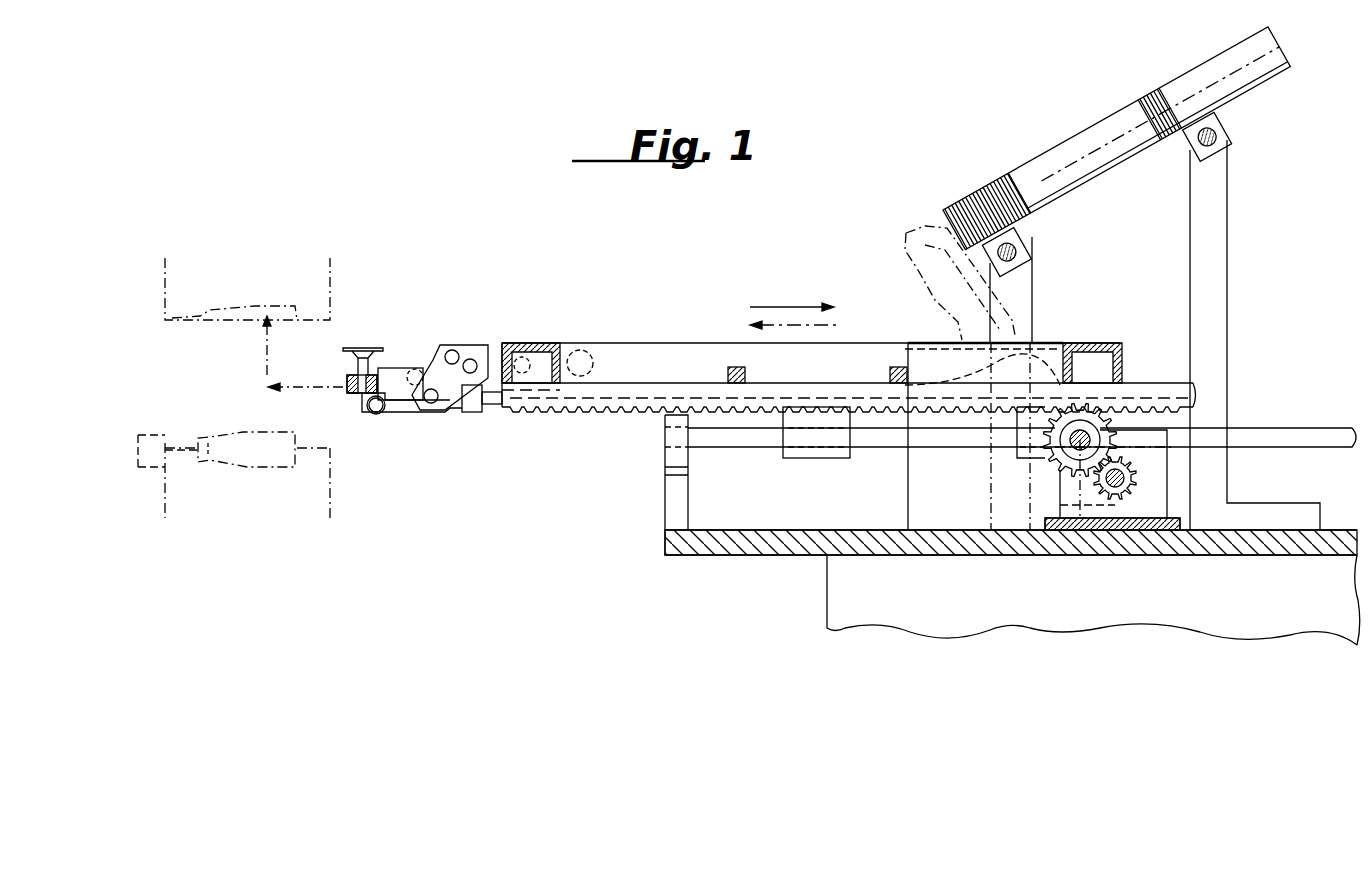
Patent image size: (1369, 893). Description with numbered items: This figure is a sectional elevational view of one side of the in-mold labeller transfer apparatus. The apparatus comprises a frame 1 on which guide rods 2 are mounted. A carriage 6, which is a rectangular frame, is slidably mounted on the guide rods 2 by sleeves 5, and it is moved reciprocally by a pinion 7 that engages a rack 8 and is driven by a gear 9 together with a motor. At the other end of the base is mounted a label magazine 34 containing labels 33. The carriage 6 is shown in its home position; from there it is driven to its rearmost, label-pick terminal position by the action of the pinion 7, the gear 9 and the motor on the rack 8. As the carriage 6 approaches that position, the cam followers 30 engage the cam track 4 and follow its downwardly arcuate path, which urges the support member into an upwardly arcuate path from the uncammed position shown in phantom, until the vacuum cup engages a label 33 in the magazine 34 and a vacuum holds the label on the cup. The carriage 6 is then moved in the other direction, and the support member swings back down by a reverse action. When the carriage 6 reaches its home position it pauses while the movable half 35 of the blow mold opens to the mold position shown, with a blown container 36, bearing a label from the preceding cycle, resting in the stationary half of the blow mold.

The frame 1 is at (680, 497).
The guide rods 2 is at (750, 437).
The cam track 4 is at (905, 285).
The sleeves 5 is at (812, 452).
The carriage 6 is at (650, 369).
The pinion 7 is at (1065, 462).
The rack 8 is at (898, 411).
The gear 9 is at (1133, 470).
The cam followers 30 is at (594, 346).
The labels 33 is at (983, 193).
The label magazine 34 is at (1072, 196).
The movable half of the blow mold 35 is at (332, 275).
The blown container 36 is at (262, 432).